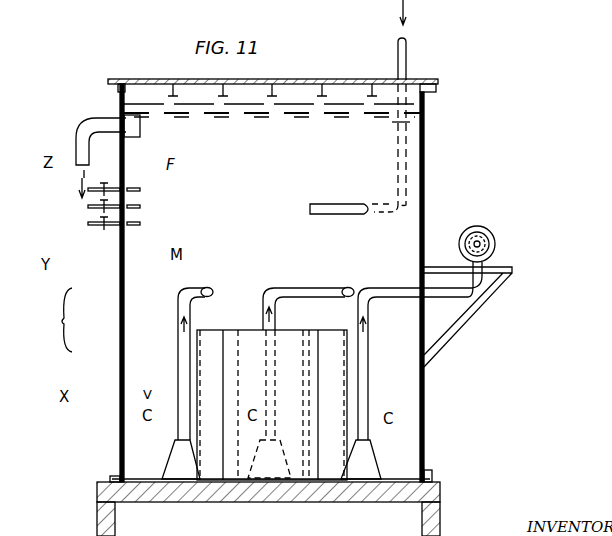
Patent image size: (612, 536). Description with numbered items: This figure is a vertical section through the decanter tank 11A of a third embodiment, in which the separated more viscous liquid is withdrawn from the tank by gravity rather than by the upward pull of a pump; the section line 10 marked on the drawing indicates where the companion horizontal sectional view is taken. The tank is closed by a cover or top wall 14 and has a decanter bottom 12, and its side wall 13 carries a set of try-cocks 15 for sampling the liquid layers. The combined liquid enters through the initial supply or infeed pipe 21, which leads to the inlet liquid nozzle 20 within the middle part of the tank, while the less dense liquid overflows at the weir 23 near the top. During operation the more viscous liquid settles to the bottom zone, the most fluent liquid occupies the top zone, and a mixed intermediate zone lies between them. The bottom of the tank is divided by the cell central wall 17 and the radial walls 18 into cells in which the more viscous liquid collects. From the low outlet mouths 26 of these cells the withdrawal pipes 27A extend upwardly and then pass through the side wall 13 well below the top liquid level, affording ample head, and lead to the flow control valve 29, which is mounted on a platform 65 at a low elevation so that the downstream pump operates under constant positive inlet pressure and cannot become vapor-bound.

The section line 10 is at (48, 105).
The decanter tank 11A is at (48, 320).
The decanter bottom 12 is at (146, 474).
The side wall 13 is at (125, 317).
The cover or top wall 14 is at (237, 83).
The try-cocks 15 is at (146, 183).
The cell central wall 17 is at (230, 340).
The cell radial walls 18 is at (207, 340).
The inlet liquid nozzle 20 is at (327, 203).
The initial supply or infeed pipe 21 is at (407, 62).
The weir 23 is at (140, 142).
The low outlet mouths 26 is at (179, 458).
The withdrawal pipes 27A is at (196, 288).
The flow control valve 29 is at (484, 237).
The platform 65 is at (497, 271).